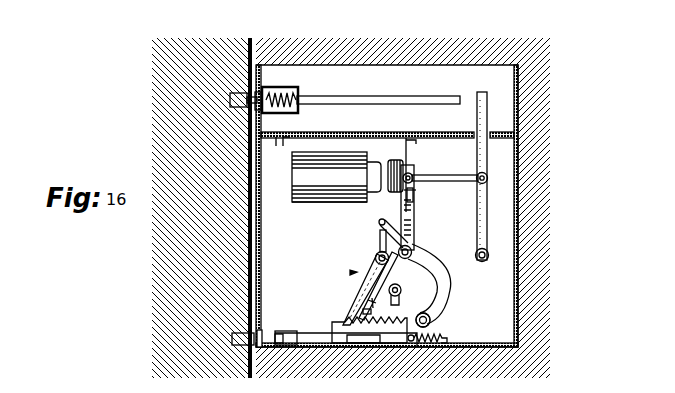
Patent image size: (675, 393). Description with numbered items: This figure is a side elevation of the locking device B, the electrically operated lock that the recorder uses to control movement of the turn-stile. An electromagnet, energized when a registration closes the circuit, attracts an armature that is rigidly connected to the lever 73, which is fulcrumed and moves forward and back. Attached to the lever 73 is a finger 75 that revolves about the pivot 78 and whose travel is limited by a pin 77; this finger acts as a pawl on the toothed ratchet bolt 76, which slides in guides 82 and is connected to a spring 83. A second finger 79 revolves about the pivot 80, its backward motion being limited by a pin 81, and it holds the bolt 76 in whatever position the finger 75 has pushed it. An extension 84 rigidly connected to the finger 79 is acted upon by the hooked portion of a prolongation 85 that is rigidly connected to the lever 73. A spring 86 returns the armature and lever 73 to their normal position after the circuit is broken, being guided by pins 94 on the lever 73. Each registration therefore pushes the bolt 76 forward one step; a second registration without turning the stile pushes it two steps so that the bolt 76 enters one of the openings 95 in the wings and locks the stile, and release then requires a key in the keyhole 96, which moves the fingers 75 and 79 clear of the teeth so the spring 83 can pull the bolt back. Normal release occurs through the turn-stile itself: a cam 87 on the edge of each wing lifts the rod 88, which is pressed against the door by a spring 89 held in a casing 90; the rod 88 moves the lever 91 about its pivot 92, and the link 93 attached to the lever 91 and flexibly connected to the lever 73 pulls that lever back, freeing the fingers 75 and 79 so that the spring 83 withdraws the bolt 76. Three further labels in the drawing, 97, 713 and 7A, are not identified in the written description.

The locking device B is at (472, 68).
The lever 91 is at (487, 222).
The pivot 92 is at (489, 254).
The link 93 is at (444, 177).
The rod 88 is at (350, 99).
The spring 89 is at (300, 94).
The casing 90 is at (282, 88).
The openings 95 is at (232, 338).
The motor 97 is at (297, 212).
The motor base 713 is at (329, 208).
The cam 87 is at (297, 152).
The spring 86 is at (411, 163).
The lever 73 is at (416, 233).
The lever pivot 7A is at (431, 321).
The pins 94 is at (413, 197).
The pivot 78 is at (412, 252).
The prolongation 85 is at (381, 229).
The extension 84 is at (380, 245).
The pivot 80 is at (376, 258).
The finger 75 is at (357, 298).
The pin 77 is at (350, 272).
The pin 81 is at (375, 303).
The finger 79 is at (371, 313).
The keyhole 96 is at (399, 300).
The ratchet bolt 76 is at (342, 322).
The guides 82 is at (290, 332).
The spring 83 is at (443, 339).